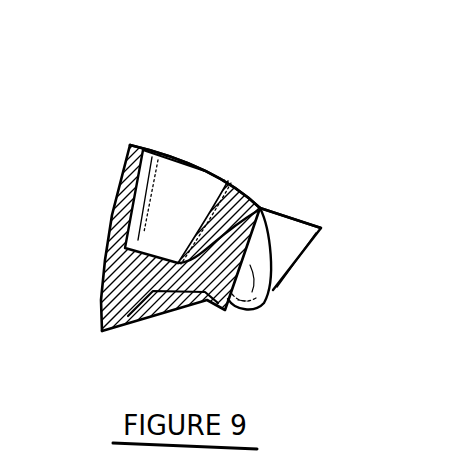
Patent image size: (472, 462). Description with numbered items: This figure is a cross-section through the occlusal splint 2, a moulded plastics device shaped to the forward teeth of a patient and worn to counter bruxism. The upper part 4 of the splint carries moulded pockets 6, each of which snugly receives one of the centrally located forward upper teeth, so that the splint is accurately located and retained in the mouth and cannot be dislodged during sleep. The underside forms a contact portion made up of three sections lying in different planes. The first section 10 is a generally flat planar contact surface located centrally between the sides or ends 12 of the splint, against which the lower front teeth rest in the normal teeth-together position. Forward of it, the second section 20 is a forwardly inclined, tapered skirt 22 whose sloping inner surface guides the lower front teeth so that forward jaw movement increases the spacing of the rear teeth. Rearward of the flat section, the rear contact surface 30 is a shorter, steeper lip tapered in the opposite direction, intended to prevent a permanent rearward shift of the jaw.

The occlusal splint 2 is at (341, 276).
The upper part 4 is at (157, 104).
The pockets 6 is at (173, 190).
The first section 10 is at (168, 304).
The sides or ends 12 is at (297, 221).
The second section 20 is at (140, 308).
The skirt 22 is at (100, 296).
The rear contact surface 30 is at (212, 306).